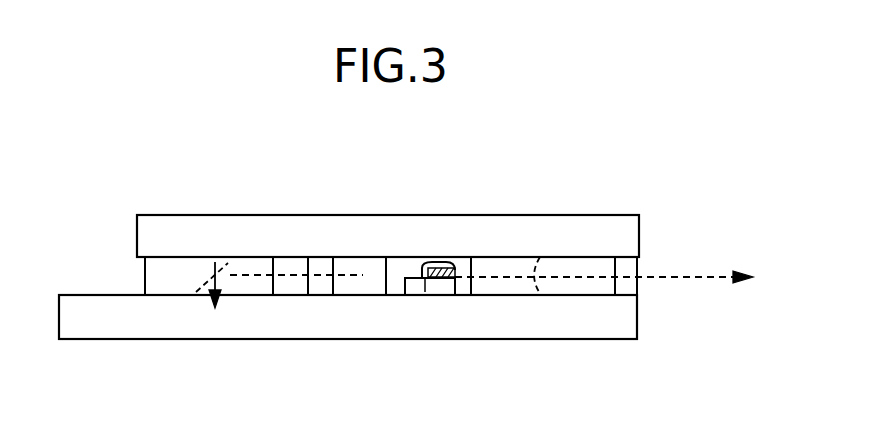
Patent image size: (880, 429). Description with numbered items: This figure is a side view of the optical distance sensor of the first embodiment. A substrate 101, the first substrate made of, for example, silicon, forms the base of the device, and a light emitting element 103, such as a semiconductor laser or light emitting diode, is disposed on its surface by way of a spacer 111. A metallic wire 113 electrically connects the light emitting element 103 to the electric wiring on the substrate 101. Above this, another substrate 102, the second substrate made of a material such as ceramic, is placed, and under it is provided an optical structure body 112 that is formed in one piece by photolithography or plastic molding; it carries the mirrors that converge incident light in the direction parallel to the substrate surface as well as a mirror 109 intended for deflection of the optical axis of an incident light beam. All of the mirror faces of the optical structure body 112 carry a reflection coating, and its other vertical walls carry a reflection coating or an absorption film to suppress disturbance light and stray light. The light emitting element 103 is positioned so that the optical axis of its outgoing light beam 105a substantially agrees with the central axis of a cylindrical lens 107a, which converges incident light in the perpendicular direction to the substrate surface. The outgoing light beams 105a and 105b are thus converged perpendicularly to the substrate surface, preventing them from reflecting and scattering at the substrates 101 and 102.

The substrate 101 is at (100, 339).
The substrate 102 is at (160, 220).
The light emitting element 103 is at (456, 262).
The outgoing light beam 105a is at (706, 268).
The outgoing light beam 105b is at (246, 266).
The cylindrical lens 107a is at (623, 286).
The mirror 109 is at (215, 264).
The spacer 111 is at (408, 270).
The optical structure body 112 is at (145, 268).
The metallic wire 113 is at (425, 280).